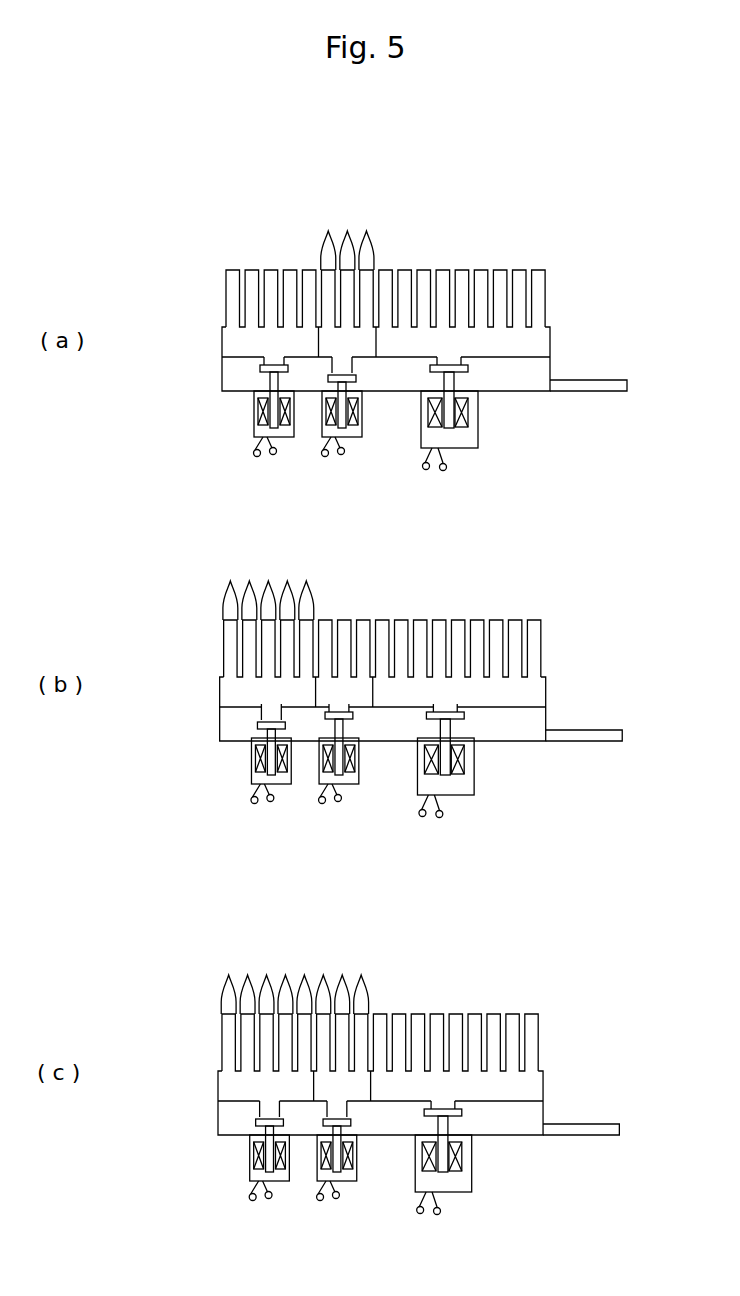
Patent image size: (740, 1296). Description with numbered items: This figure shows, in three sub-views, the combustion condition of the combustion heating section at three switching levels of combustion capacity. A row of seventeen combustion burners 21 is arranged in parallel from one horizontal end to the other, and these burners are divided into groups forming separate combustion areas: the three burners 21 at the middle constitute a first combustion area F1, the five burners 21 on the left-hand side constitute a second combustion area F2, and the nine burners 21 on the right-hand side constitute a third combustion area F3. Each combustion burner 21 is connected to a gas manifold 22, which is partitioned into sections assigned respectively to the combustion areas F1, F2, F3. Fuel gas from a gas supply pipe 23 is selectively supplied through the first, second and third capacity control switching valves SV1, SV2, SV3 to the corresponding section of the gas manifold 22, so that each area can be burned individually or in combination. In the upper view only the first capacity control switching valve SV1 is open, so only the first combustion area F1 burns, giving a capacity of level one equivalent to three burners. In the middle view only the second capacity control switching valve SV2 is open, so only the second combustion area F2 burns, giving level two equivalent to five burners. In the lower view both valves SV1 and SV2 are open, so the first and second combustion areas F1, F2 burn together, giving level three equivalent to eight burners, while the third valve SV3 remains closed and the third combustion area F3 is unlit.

The combustion burner 21 is at (547, 305).
The gas manifold 22 is at (220, 343).
The gas supply pipe 23 is at (593, 379).
The first capacity control switching valve SV1 is at (364, 418).
The second capacity control switching valve SV2 is at (252, 414).
The third capacity control switching valve SV3 is at (479, 414).
The first combustion area F1 is at (342, 217).
The second combustion area F2 is at (257, 221).
The third combustion area F3 is at (476, 216).